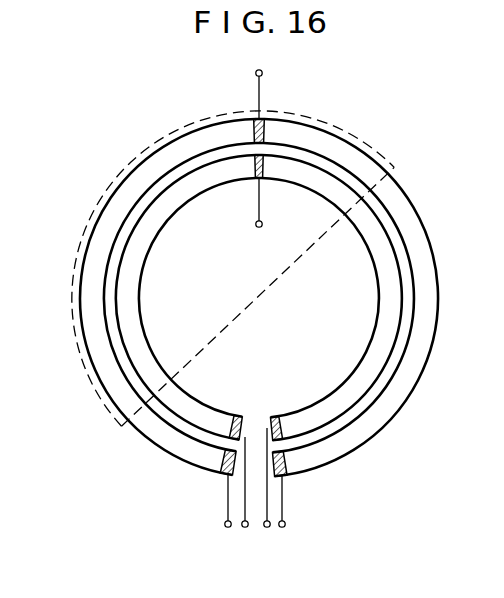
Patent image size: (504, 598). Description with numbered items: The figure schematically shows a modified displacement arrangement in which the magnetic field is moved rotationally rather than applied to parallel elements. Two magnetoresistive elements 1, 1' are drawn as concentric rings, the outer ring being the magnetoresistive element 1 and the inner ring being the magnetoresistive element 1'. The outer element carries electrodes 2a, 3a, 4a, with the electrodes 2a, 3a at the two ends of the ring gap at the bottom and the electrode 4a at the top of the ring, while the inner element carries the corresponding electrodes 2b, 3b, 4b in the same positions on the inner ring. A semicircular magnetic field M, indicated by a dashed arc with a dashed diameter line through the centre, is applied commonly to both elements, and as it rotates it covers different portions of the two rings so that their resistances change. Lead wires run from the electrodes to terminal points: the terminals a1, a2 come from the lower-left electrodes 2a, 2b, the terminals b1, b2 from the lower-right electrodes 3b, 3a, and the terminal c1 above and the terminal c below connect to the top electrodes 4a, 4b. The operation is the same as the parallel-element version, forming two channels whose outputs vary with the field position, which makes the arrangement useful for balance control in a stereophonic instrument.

The magnetoresistive element 1 is at (265, 297).
The magnetoresistive element 1' is at (259, 297).
The electrode 2a is at (222, 477).
The electrode 2b is at (236, 417).
The electrode 3a is at (290, 477).
The electrode 3b is at (277, 417).
The electrode 4a is at (268, 126).
The electrode 4b is at (266, 166).
The semicircular magnetic field M is at (98, 206).
The lead terminal a1 is at (225, 513).
The lead terminal a2 is at (246, 494).
The lead terminal b1 is at (269, 489).
The lead terminal b2 is at (289, 513).
The lead terminal c1 is at (260, 83).
The lead terminal c is at (257, 214).